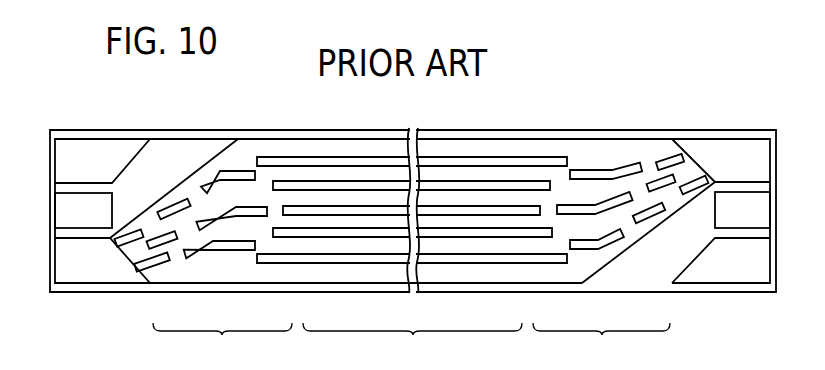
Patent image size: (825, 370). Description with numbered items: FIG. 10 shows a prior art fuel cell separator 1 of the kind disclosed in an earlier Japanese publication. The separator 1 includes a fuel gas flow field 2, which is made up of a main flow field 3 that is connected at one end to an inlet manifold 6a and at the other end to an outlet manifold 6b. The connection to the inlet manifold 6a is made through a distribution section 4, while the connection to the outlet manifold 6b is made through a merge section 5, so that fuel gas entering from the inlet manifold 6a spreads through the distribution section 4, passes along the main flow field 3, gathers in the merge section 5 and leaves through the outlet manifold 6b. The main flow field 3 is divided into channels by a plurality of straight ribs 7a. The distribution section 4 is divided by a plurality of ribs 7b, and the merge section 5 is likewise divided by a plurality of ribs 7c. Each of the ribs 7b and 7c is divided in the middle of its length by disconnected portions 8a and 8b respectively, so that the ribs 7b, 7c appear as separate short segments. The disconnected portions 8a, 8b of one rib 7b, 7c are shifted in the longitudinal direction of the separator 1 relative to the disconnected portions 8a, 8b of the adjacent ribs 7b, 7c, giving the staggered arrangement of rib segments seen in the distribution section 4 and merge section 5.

The separator 1 is at (639, 73).
The fuel gas flow field 2 is at (507, 127).
The main flow field 3 is at (412, 344).
The distribution section 4 is at (601, 344).
The merge section 5 is at (222, 344).
The inlet manifold 6a is at (745, 145).
The outlet manifold 6b is at (95, 266).
The ribs 7a is at (482, 188).
The ribs 7b is at (597, 208).
The ribs 7c is at (243, 207).
The disconnected portions 8a is at (643, 194).
The disconnected portions 8b is at (182, 227).